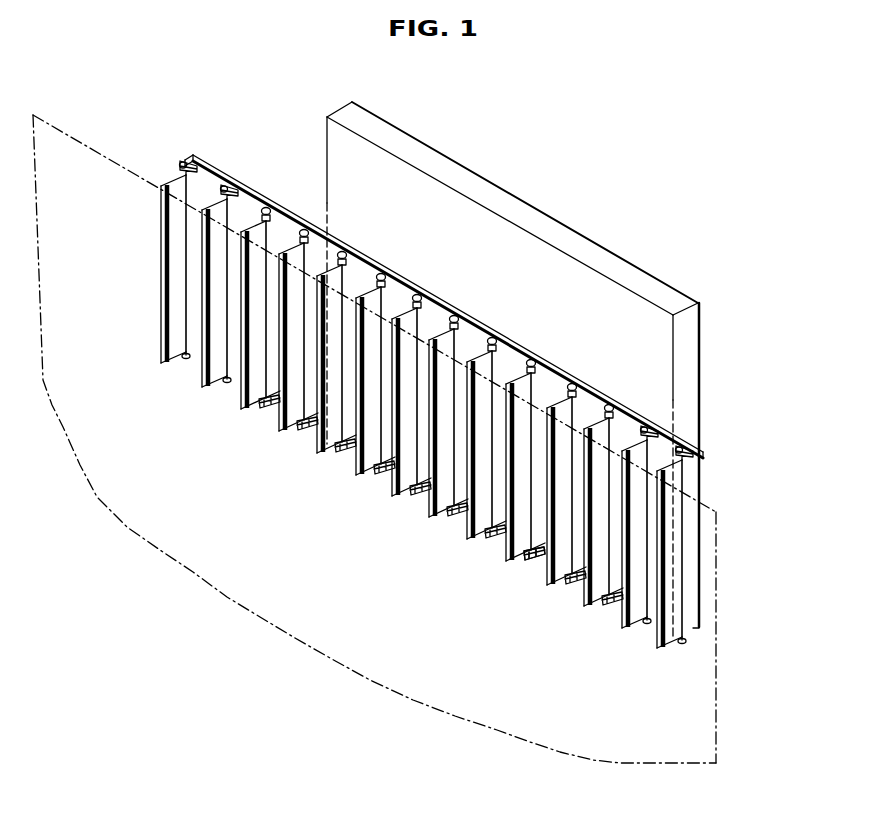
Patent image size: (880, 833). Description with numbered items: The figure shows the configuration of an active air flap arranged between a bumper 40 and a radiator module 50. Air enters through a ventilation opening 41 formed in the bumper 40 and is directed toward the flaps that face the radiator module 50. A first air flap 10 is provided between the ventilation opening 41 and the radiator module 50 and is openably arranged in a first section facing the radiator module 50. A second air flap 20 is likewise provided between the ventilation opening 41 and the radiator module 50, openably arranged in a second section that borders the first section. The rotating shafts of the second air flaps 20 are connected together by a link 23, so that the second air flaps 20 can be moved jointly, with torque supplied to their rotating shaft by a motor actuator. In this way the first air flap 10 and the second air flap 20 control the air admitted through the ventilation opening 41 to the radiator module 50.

The first air flap 10 is at (353, 383).
The second air flap 20 is at (185, 265).
The link 23 is at (218, 173).
The bumper 40 is at (303, 645).
The ventilation opening 41 is at (527, 553).
The radiator module 50 is at (482, 168).